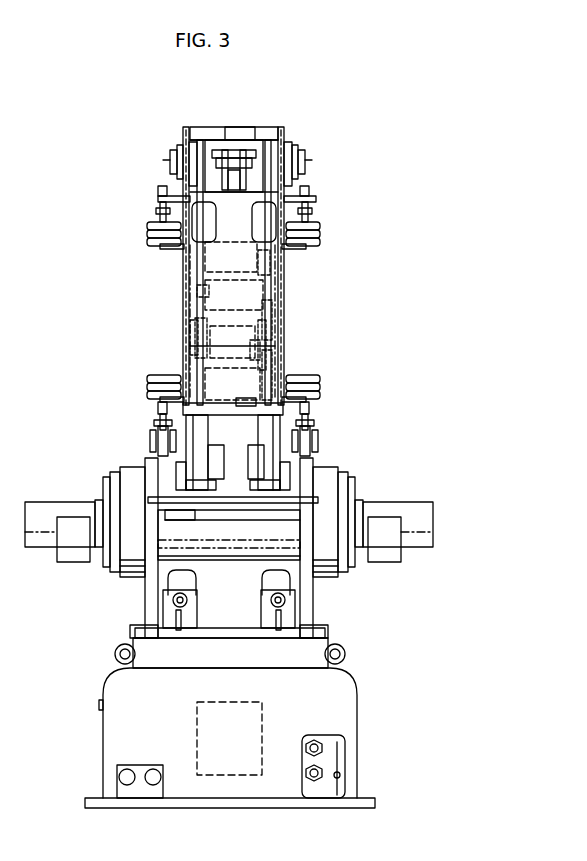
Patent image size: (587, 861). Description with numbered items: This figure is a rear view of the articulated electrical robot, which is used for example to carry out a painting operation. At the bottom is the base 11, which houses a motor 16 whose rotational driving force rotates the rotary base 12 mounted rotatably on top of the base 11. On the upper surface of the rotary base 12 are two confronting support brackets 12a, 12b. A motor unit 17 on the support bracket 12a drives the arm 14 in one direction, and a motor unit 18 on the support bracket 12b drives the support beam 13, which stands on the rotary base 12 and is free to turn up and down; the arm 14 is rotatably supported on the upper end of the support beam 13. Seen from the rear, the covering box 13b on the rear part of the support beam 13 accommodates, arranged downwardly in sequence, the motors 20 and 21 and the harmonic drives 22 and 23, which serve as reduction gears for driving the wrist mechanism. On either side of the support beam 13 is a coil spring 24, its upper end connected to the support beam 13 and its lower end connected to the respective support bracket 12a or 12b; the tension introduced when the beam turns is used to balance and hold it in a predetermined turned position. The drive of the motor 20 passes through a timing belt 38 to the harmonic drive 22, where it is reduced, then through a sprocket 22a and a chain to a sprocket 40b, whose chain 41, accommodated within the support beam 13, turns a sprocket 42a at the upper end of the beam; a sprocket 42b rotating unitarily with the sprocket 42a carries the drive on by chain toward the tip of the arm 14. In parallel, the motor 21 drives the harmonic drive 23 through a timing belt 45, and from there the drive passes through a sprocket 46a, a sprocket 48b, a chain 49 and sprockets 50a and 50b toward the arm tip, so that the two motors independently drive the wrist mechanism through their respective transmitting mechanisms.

The base 11 is at (358, 702).
The rotary base 12 is at (325, 620).
The support bracket 12a is at (145, 587).
The support bracket 12b is at (313, 587).
The support beam 13 is at (290, 195).
The covering box 13b is at (283, 280).
The arm 14 is at (240, 127).
The motor 16 is at (197, 718).
The motor unit 17 is at (43, 502).
The motor unit 18 is at (413, 502).
The motor 20 is at (205, 250).
The motor 21 is at (270, 302).
The harmonic drive 22 is at (270, 356).
The sprocket 22a is at (205, 372).
The harmonic drive 23 is at (236, 462).
The coil springs 24 is at (160, 228).
The timing belt 38 is at (265, 322).
The sprocket 40b is at (195, 340).
The chain 41 is at (190, 280).
The sprocket 42a is at (186, 135).
The sprocket 42b is at (203, 140).
The timing belt 45 is at (205, 302).
The plate 46a is at (262, 400).
The sprocket 48b is at (262, 372).
The chain 49 is at (283, 250).
The sprocket 50a is at (284, 134).
The sprocket 50b is at (268, 140).